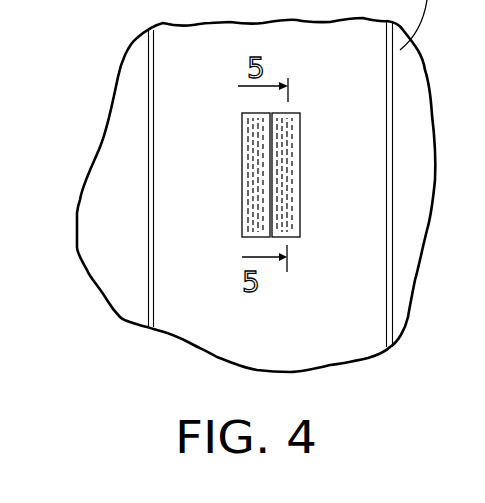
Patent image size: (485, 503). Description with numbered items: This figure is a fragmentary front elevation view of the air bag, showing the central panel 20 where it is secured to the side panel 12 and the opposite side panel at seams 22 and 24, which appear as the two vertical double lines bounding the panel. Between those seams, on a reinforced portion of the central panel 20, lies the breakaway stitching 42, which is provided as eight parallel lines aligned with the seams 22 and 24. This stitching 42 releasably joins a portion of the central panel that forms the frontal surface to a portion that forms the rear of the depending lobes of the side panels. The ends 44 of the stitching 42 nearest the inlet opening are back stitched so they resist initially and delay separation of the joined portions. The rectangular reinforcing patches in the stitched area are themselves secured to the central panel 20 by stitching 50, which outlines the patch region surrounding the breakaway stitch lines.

The side panel 12 is at (113, 233).
The central panel 20 is at (300, 336).
The seam 22 is at (150, 63).
The seam 24 is at (388, 308).
The breakaway stitching 42 is at (243, 192).
The ends of the stitching 44 is at (250, 117).
The stitching 50 is at (302, 125).